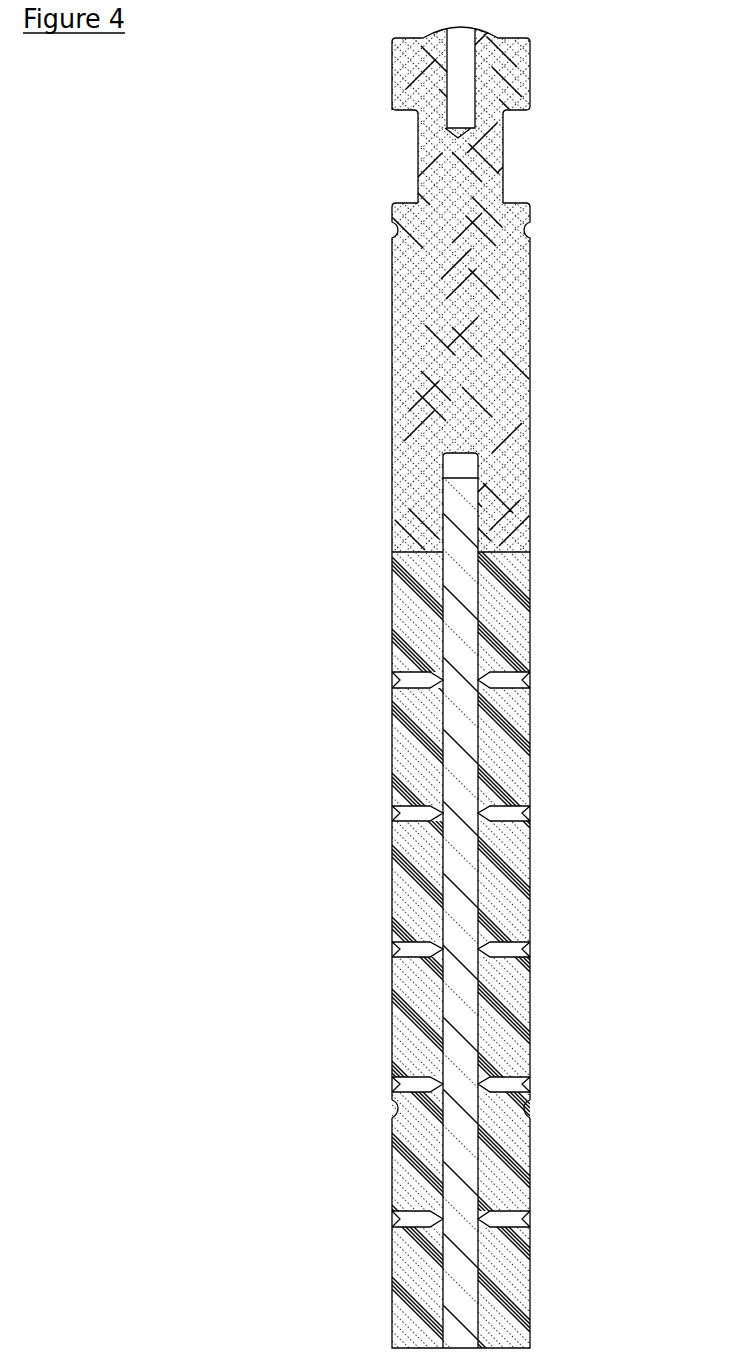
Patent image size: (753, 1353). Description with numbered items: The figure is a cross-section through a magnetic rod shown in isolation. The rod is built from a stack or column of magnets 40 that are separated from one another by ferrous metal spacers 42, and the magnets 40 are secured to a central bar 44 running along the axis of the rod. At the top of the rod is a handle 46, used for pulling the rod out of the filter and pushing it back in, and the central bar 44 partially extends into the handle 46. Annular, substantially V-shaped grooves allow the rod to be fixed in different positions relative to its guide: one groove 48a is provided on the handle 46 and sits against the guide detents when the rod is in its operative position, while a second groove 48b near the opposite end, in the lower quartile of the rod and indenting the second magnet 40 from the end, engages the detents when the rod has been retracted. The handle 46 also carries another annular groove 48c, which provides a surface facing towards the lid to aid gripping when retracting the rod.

The magnets 40 is at (505, 1008).
The ferrous metal spacers 42 is at (407, 815).
The central bar 44 is at (460, 623).
The handle 46 is at (497, 353).
The groove 48a is at (530, 230).
The second groove 48b is at (530, 1108).
The annular groove 48c is at (515, 155).